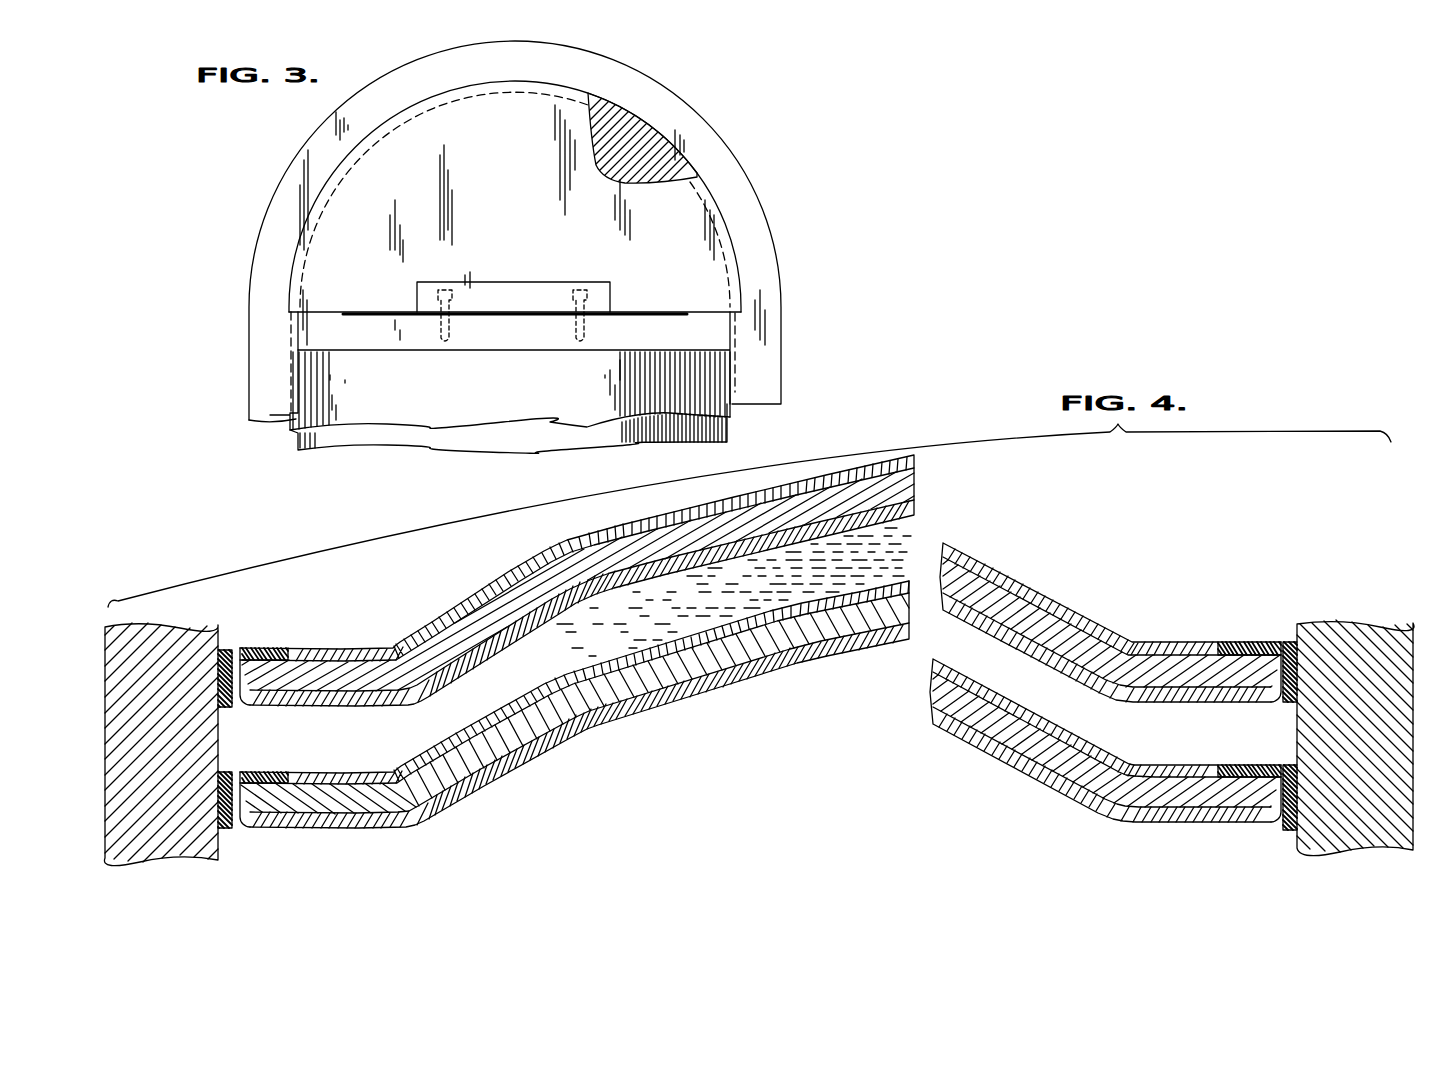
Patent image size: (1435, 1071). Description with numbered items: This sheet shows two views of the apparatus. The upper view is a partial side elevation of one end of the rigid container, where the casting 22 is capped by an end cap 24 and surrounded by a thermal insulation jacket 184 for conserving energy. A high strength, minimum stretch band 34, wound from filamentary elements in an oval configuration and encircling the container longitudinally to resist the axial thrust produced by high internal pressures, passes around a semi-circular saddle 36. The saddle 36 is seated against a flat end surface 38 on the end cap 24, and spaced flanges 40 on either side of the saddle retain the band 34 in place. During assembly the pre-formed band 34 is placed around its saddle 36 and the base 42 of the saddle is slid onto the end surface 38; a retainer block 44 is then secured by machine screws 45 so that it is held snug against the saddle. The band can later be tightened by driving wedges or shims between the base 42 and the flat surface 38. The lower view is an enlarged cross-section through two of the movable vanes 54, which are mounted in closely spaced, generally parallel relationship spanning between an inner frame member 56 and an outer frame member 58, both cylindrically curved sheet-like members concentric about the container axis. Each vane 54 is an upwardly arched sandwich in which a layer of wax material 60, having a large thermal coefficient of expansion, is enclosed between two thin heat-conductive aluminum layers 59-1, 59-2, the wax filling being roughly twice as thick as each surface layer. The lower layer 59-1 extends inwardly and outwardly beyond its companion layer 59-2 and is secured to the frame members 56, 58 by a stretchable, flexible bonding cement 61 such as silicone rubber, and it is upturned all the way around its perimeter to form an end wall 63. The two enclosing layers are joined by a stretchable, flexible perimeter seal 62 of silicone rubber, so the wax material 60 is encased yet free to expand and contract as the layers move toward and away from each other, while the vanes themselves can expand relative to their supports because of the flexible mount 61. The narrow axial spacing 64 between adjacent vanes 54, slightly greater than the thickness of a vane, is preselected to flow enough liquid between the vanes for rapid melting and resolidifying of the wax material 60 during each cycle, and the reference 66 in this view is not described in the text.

In FIG. 3, the casting 22 is at (494, 449).
In FIG. 3, the end cap 24 is at (494, 345).
In FIG. 3, the band 34 is at (694, 127).
In FIG. 3, the saddle 36 is at (637, 137).
In FIG. 3, the flat end surface 38 is at (673, 307).
In FIG. 3, the flange 40 is at (615, 103).
In FIG. 3, the base 42 is at (703, 312).
In FIG. 3, the retainer block 44 is at (600, 284).
In FIG. 3, the machine screw 45 is at (578, 297).
In FIG. 3, the thermal insulation jacket 184 is at (492, 409).
In FIG. 4, the vane 54 is at (449, 593).
In FIG. 4, the inner frame member 56 is at (165, 637).
In FIG. 4, the outer frame member 58 is at (1352, 625).
In FIG. 4, the aluminum layer 59-1 is at (918, 513).
In FIG. 4, the aluminum layer 59-2 is at (917, 465).
In FIG. 4, the wax material 60 is at (918, 489).
In FIG. 4, the bonding cement 61 is at (229, 650).
In FIG. 4, the perimeter seal 62 is at (268, 648).
In FIG. 4, the end wall 63 is at (252, 676).
In FIG. 4, the spacing 64 is at (582, 625).
In FIG. 4, the gap 66 is at (826, 569).